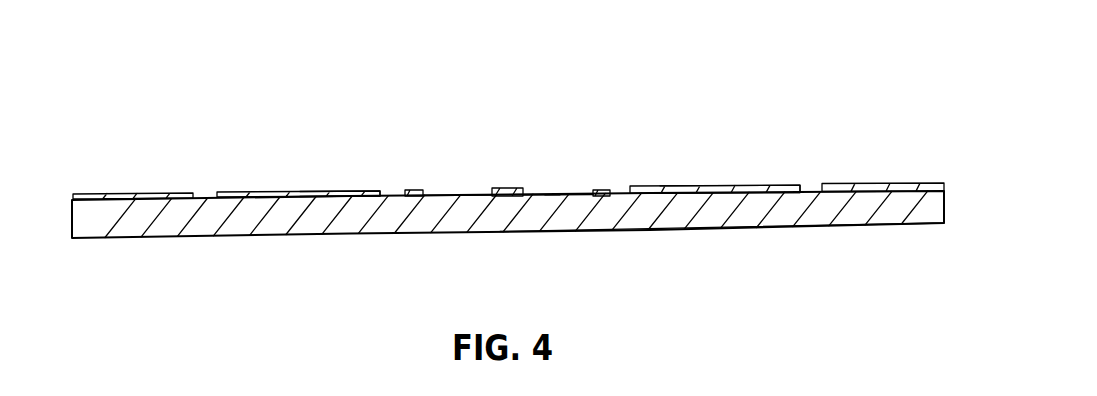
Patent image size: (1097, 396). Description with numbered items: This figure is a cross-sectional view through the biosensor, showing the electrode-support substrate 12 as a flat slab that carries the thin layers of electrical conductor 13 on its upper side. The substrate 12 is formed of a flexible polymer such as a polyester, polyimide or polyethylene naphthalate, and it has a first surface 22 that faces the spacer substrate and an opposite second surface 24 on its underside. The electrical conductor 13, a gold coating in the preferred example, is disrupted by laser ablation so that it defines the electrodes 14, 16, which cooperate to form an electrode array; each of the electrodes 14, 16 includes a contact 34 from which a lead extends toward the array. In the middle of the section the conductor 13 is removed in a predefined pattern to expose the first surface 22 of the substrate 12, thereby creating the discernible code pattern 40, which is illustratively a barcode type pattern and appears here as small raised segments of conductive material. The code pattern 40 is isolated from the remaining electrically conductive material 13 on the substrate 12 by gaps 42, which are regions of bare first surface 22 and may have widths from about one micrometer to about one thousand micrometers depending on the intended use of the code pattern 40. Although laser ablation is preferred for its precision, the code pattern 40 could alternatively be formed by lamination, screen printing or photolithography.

The electrode-support substrate 12 is at (322, 274).
The electrical conductor 13 is at (121, 193).
The electrode 14 is at (241, 184).
The electrode 16 is at (770, 176).
The first surface 22 is at (437, 194).
The second surface 24 is at (707, 230).
The contact 34 is at (352, 191).
The code pattern 40 is at (410, 181).
The gaps 42 is at (549, 182).